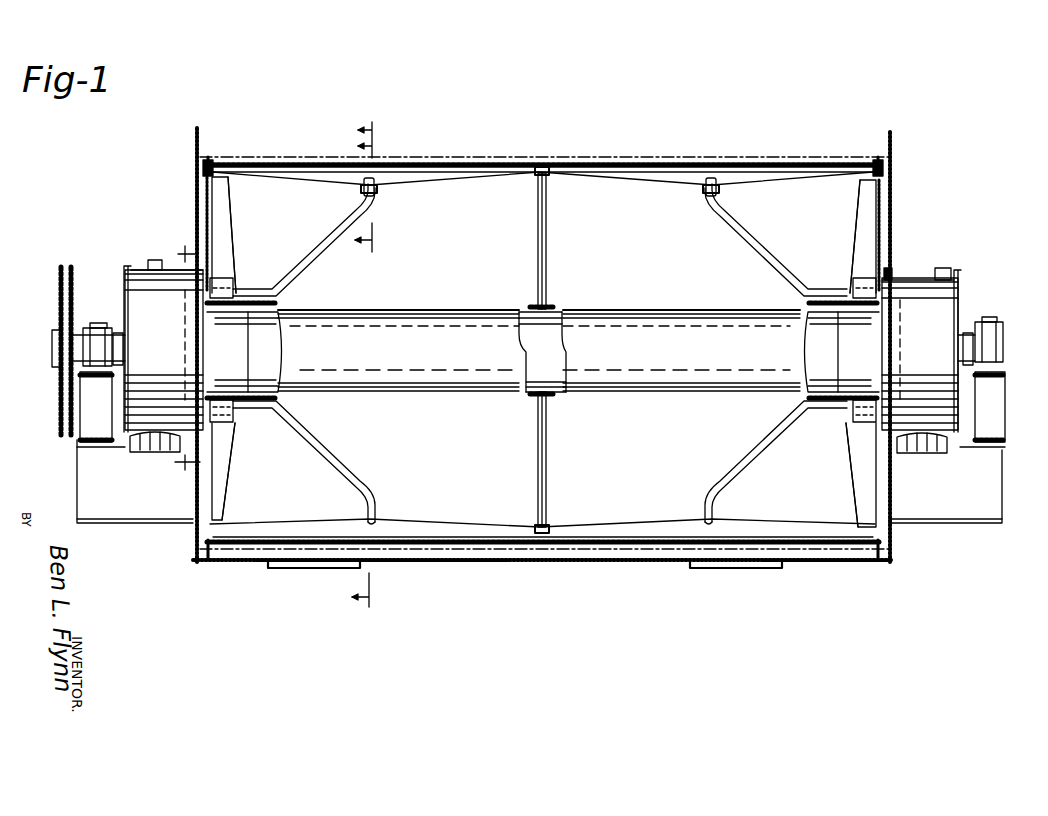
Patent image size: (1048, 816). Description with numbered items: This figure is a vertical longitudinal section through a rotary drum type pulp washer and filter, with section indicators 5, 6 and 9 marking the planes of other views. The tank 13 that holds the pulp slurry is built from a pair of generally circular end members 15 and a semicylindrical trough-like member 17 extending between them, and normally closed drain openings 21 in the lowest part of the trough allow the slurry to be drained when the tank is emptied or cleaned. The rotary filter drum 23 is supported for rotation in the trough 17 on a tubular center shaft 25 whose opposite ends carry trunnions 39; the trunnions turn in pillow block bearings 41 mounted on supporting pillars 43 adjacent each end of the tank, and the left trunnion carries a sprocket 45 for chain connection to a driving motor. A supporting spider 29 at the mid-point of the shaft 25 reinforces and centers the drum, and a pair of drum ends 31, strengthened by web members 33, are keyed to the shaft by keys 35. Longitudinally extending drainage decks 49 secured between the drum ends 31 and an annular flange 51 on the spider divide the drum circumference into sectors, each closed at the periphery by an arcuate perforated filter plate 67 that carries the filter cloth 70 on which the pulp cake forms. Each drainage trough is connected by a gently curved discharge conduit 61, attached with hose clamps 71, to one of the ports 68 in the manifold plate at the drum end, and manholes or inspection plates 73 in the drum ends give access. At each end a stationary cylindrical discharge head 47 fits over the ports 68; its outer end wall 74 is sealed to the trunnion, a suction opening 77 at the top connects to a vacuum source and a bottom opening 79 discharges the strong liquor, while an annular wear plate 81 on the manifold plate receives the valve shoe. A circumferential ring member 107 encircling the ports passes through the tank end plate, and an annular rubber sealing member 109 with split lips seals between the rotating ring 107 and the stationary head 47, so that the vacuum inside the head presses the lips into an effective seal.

The section line 5- 5 is at (371, 363).
The section line 6- 6 is at (374, 192).
The section line 9- 9 is at (180, 363).
The tank 13 is at (532, 363).
The end members 15 is at (194, 492).
The trough-like member 17 is at (860, 565).
The drain openings 21 is at (304, 568).
The rotary filter drum 23 is at (648, 165).
The center shaft 25 is at (593, 322).
The supporting spider 29 is at (548, 254).
The drum ends 31 is at (218, 252).
The web members 33 is at (230, 206).
The keys 35 is at (238, 318).
The trunnions 39 is at (124, 350).
The pillow block bearings 41 is at (108, 328).
The supporting pillars 43 is at (80, 436).
The sprocket 45 is at (58, 311).
The discharge heads 47 is at (165, 270).
The drainage decks 49 is at (403, 180).
The annular flange 51 is at (552, 172).
The discharge conduits 61 is at (308, 250).
The perforated filter plate 67 is at (466, 165).
The ports 68 is at (240, 286).
The filter cloth 70 is at (798, 164).
The hose clamps 71 is at (378, 189).
The inspection plates 73 is at (205, 208).
The outer end wall 74 is at (123, 286).
The suction opening 77 is at (150, 266).
The bottom opening 79 is at (132, 452).
The wear plate 81 is at (895, 267).
The ring member 107 is at (200, 352).
The sealing member 109 is at (222, 264).